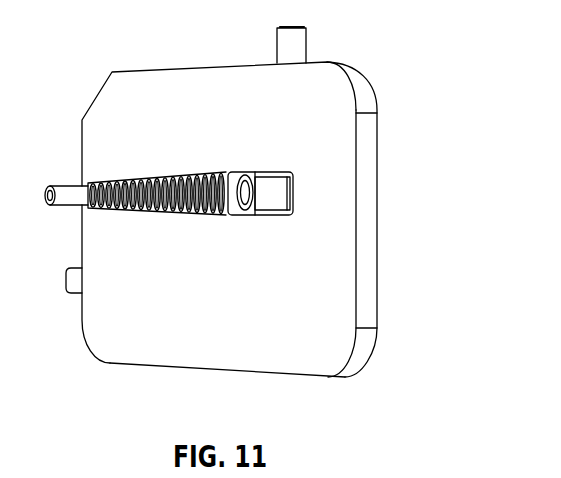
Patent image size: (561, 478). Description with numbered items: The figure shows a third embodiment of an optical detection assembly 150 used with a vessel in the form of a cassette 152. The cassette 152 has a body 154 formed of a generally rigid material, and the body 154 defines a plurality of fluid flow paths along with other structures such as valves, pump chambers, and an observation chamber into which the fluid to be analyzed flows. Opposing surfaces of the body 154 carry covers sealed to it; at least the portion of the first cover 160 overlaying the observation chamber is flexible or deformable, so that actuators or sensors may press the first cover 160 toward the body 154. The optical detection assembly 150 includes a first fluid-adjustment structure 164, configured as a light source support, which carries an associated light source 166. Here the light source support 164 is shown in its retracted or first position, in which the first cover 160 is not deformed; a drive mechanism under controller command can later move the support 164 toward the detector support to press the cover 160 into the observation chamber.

The optical detection assembly 150 is at (78, 358).
The cassette 152 is at (115, 108).
The body 154 is at (370, 273).
The first cover 160 is at (283, 353).
The first fluid-adjustment structure 164 is at (283, 190).
The light source 166 is at (66, 199).